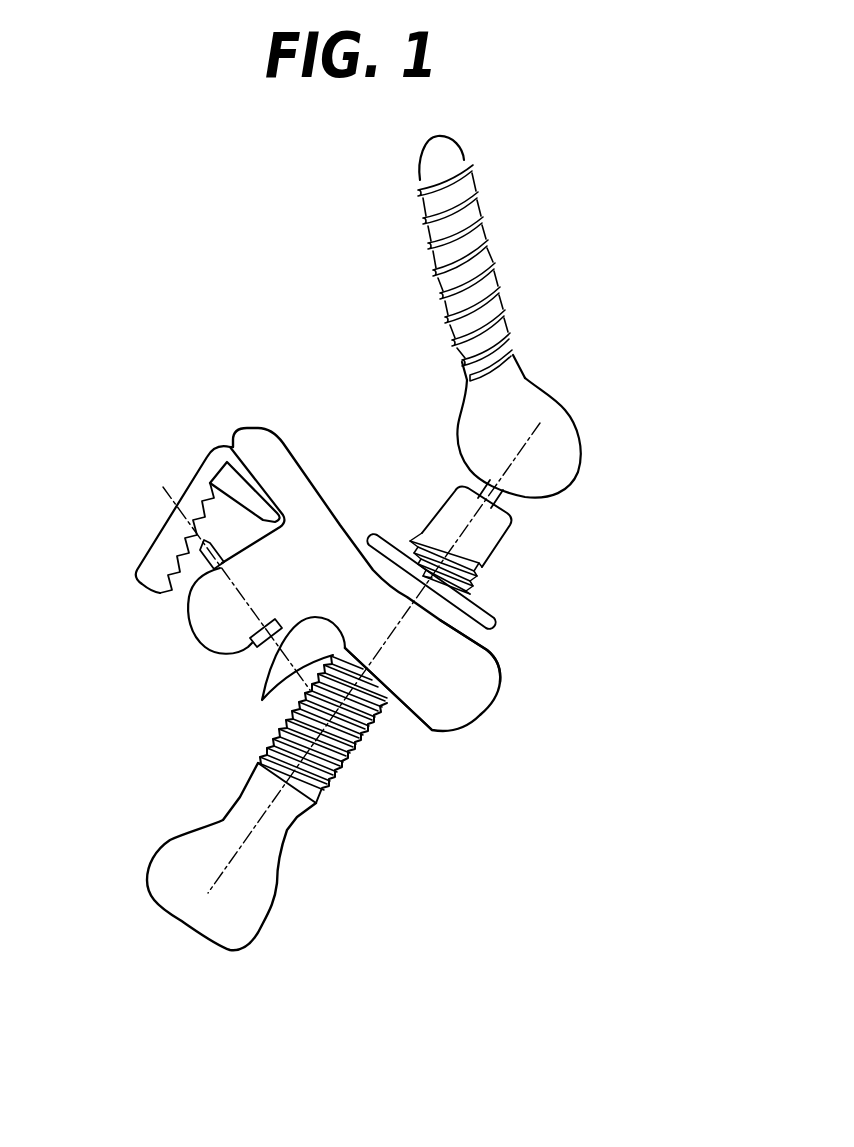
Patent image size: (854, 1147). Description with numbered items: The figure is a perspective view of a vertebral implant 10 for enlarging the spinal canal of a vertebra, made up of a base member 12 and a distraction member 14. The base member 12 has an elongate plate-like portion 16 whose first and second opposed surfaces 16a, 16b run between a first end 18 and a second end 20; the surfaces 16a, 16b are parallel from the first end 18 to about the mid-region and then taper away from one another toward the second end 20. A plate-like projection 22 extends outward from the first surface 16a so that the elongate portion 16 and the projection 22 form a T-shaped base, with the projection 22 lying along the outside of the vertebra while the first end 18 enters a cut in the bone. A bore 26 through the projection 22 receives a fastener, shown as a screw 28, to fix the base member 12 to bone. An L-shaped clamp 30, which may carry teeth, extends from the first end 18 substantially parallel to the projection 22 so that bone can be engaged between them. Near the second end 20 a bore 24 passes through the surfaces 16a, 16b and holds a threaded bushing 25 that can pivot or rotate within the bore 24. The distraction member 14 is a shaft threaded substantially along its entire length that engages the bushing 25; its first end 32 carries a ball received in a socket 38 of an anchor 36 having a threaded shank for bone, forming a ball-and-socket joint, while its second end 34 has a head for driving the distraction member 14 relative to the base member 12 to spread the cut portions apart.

The vertebral implant 10 is at (653, 205).
The base member 12 is at (465, 741).
The distraction member 14 is at (327, 825).
The elongate plate-like portion 16 is at (308, 596).
The first surface 16a is at (407, 731).
The second surface 16b is at (490, 650).
The first end 18 is at (245, 420).
The second end 20 is at (500, 677).
The projection 22 is at (215, 628).
The bore 24 is at (262, 700).
The threaded bushing 25 is at (374, 531).
The bore 26 is at (207, 572).
The screw 28 is at (253, 650).
The clamp 30 is at (153, 533).
The first end 32 is at (507, 520).
The second end 34 is at (257, 940).
The anchor 36 is at (567, 413).
The socket 38 is at (537, 500).